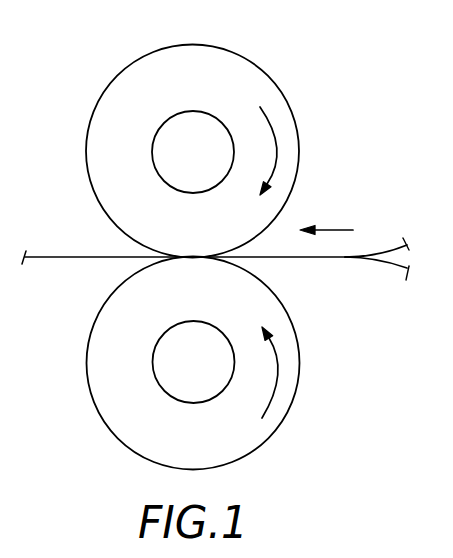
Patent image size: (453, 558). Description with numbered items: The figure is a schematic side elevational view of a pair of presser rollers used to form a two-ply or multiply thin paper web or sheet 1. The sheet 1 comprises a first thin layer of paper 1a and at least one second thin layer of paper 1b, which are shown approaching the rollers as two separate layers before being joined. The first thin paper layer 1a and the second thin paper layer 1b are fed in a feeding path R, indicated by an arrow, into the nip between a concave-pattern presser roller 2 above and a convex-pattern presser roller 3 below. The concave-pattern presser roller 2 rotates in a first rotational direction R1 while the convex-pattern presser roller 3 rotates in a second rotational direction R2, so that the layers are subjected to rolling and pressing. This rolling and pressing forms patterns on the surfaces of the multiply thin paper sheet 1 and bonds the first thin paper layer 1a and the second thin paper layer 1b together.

The multiply thin paper sheet 1 is at (60, 257).
The first thin layer of paper 1a is at (400, 243).
The second thin layer of paper 1b is at (400, 267).
The concave-pattern presser roller 2 is at (230, 72).
The convex-pattern presser roller 3 is at (112, 360).
The feeding path R is at (330, 230).
The first rotational direction R1 is at (280, 139).
The second rotational direction R2 is at (277, 372).